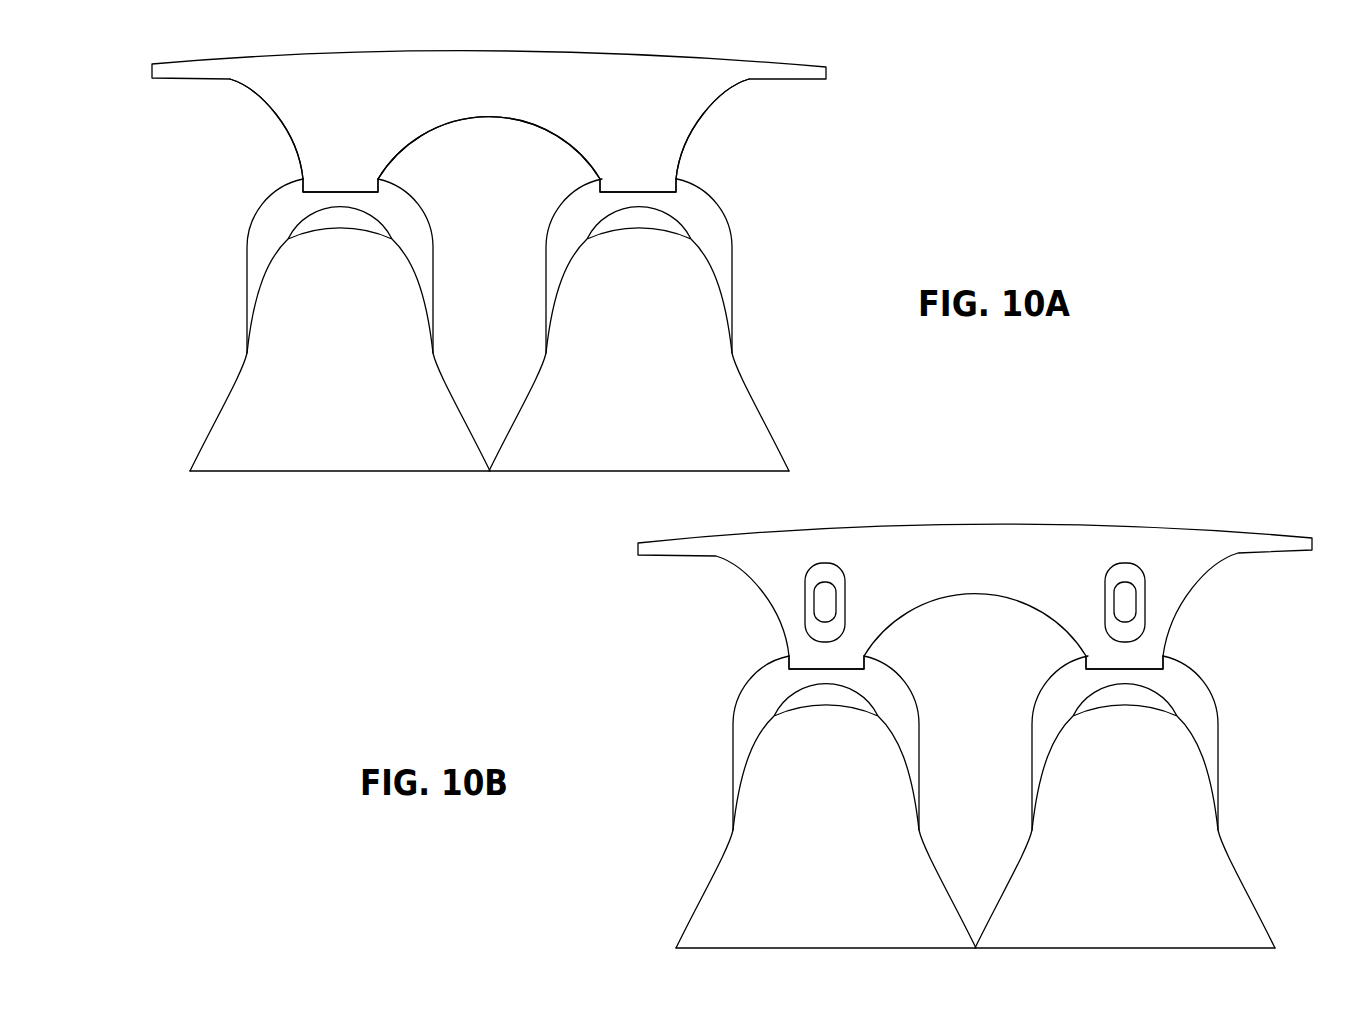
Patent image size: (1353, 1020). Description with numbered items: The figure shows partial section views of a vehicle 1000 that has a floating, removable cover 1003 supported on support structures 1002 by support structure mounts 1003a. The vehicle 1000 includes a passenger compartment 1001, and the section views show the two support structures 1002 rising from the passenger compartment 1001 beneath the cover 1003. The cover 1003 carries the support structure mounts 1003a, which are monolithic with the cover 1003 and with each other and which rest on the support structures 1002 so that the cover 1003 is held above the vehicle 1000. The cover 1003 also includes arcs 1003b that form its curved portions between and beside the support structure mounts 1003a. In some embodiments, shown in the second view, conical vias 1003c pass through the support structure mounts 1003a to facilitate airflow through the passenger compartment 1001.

In FIG. 10A, the vehicle 1000 is at (228, 517).
In FIG. 10B, the vehicle 1000 is at (574, 867).
In FIG. 10A, the passenger compartment 1001 is at (197, 257).
In FIG. 10B, the passenger compartment 1001 is at (588, 714).
In FIG. 10A, the support structures 1002 is at (548, 222).
In FIG. 10B, the support structures 1002 is at (1034, 699).
In FIG. 10A, the cover 1003 is at (827, 69).
In FIG. 10B, the cover 1003 is at (975, 527).
In FIG. 10A, the support structure mounts 1003a is at (380, 156).
In FIG. 10B, the support structure mounts 1003a is at (866, 619).
In FIG. 10A, the arcs 1003b is at (273, 110).
In FIG. 10B, the conical vias 1003c is at (805, 625).